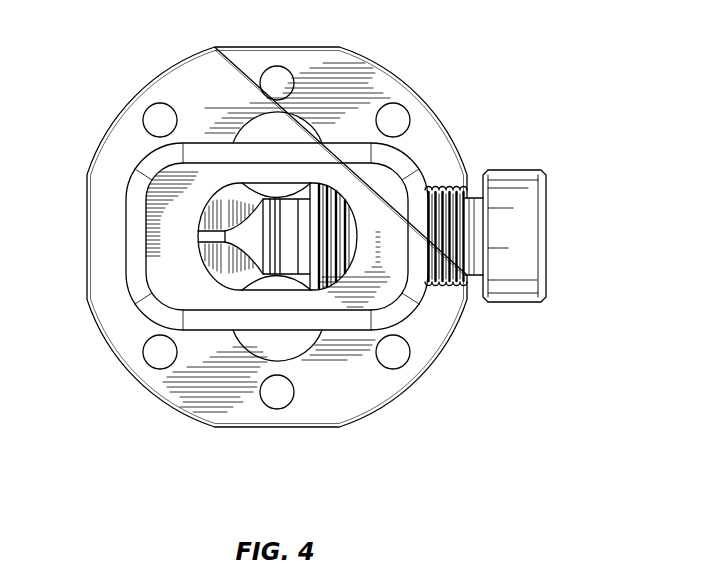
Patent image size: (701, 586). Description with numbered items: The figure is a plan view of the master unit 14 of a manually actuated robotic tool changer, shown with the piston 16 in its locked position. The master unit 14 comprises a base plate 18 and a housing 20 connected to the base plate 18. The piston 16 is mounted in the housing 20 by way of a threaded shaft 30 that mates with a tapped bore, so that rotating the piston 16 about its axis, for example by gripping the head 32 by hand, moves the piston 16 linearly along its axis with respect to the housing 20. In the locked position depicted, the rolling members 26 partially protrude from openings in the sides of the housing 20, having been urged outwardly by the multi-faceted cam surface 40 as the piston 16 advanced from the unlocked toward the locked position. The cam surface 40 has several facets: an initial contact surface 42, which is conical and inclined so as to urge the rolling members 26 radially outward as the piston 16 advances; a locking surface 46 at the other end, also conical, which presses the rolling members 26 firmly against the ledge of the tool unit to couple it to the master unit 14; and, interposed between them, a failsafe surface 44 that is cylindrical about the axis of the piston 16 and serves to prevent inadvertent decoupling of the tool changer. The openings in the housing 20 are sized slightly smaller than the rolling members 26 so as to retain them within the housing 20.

The master unit 14 is at (357, 450).
The piston 16 is at (510, 153).
The base plate 18 is at (363, 90).
The housing 20 is at (373, 188).
The rolling members 26 is at (266, 133).
The threaded shaft 30 is at (453, 282).
The head 32 is at (503, 237).
The multi-faceted cam surface 40 is at (233, 272).
The initial contact surface 42 is at (245, 205).
The failsafe surface 44 is at (278, 275).
The locking surface 46 is at (284, 276).